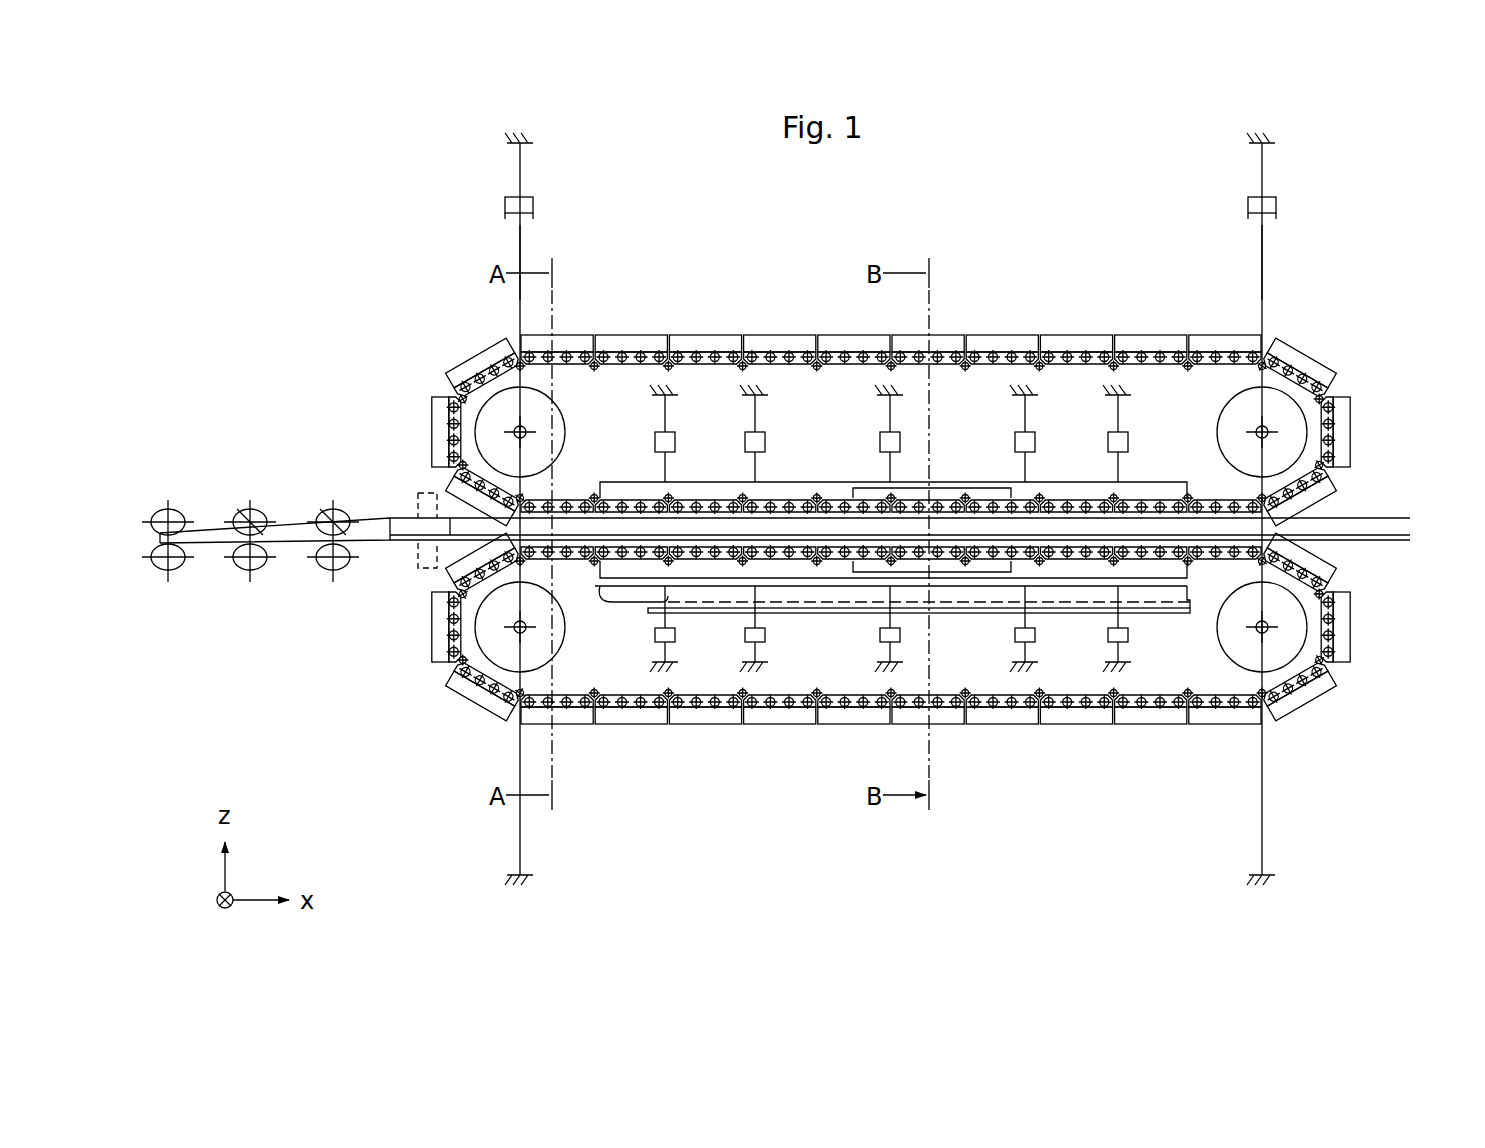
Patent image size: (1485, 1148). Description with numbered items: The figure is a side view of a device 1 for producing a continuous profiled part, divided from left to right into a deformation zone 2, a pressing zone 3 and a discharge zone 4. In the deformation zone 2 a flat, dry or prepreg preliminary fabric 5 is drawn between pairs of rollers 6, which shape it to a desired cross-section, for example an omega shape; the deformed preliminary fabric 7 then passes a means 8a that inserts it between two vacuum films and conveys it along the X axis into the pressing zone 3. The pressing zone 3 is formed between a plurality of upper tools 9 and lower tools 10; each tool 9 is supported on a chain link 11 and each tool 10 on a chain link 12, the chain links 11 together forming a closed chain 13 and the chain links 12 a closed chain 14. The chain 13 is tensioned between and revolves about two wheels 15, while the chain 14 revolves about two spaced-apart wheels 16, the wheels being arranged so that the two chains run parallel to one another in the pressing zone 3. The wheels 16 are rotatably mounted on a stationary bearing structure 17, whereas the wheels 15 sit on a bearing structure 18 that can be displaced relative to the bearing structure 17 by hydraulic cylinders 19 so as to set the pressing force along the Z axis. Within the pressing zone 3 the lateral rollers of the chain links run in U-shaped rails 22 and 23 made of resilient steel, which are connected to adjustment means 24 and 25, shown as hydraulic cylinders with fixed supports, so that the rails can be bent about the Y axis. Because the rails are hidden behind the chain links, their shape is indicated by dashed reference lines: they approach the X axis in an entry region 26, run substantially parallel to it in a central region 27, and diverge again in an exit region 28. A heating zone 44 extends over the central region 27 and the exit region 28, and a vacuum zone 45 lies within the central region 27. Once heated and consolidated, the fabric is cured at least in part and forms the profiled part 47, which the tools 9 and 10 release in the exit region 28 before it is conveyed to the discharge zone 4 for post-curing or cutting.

The device 1 is at (374, 184).
The deformation zone 2 is at (410, 250).
The pressing zone 3 is at (1162, 480).
The discharge zone 4 is at (1445, 250).
The preliminary fabric 5 is at (152, 518).
The rollers 6 is at (256, 512).
The deformed preliminary fabric 7 is at (402, 520).
The inserting means 8a is at (418, 566).
The tools 9 is at (470, 373).
The tools 10 is at (500, 700).
The chain link 11 is at (497, 352).
The chain link 12 is at (478, 686).
The chain 13 is at (621, 334).
The chain 14 is at (621, 728).
The wheels 15 is at (493, 430).
The wheels 16 is at (493, 628).
The stationary bearing structure 17 is at (519, 172).
The bearing structure 18 is at (519, 246).
The hydraulic cylinders 19 is at (505, 205).
The rails 22 is at (1045, 497).
The rails 23 is at (1050, 578).
The adjustment means 24 is at (1118, 413).
The adjustment means 25 is at (755, 652).
The entry region 26 is at (622, 604).
The central region 27 is at (945, 604).
The exit region 28 is at (1160, 614).
The heating zone 44 is at (1186, 602).
The vacuum zone 45 is at (826, 490).
The profiled part 47 is at (1375, 520).